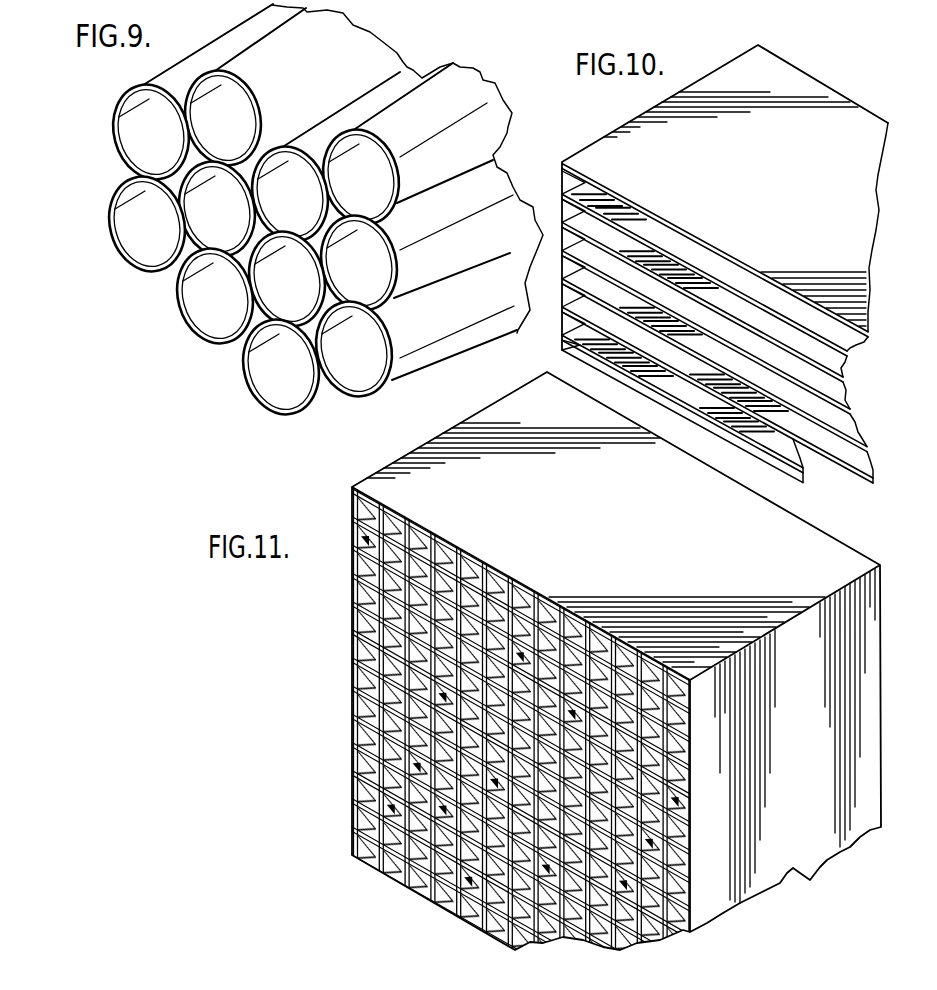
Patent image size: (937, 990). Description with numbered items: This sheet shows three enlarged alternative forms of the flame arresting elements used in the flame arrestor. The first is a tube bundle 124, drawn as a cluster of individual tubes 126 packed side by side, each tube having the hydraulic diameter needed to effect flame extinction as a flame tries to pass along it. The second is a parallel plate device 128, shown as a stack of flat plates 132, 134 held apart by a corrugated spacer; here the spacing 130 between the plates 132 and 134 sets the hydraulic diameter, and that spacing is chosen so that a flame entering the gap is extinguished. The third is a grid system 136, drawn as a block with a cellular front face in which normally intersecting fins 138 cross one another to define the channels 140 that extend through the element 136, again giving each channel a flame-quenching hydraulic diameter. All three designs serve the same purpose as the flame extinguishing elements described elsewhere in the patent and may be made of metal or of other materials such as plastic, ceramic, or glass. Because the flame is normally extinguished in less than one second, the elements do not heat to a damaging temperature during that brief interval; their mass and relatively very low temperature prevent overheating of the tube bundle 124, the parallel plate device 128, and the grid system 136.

In FIG. 9, the tube bundle 124 is at (104, 145).
In FIG. 9, the tubes 126 is at (470, 78).
In FIG. 10, the parallel plate device 128 is at (888, 116).
In FIG. 10, the spacing 130 is at (637, 220).
In FIG. 10, the plate 132 is at (702, 242).
In FIG. 10, the plate 134 is at (733, 293).
In FIG. 11, the grid system 136 is at (338, 636).
In FIG. 11, the intersecting fins 138 is at (437, 547).
In FIG. 11, the channels 140 is at (525, 600).